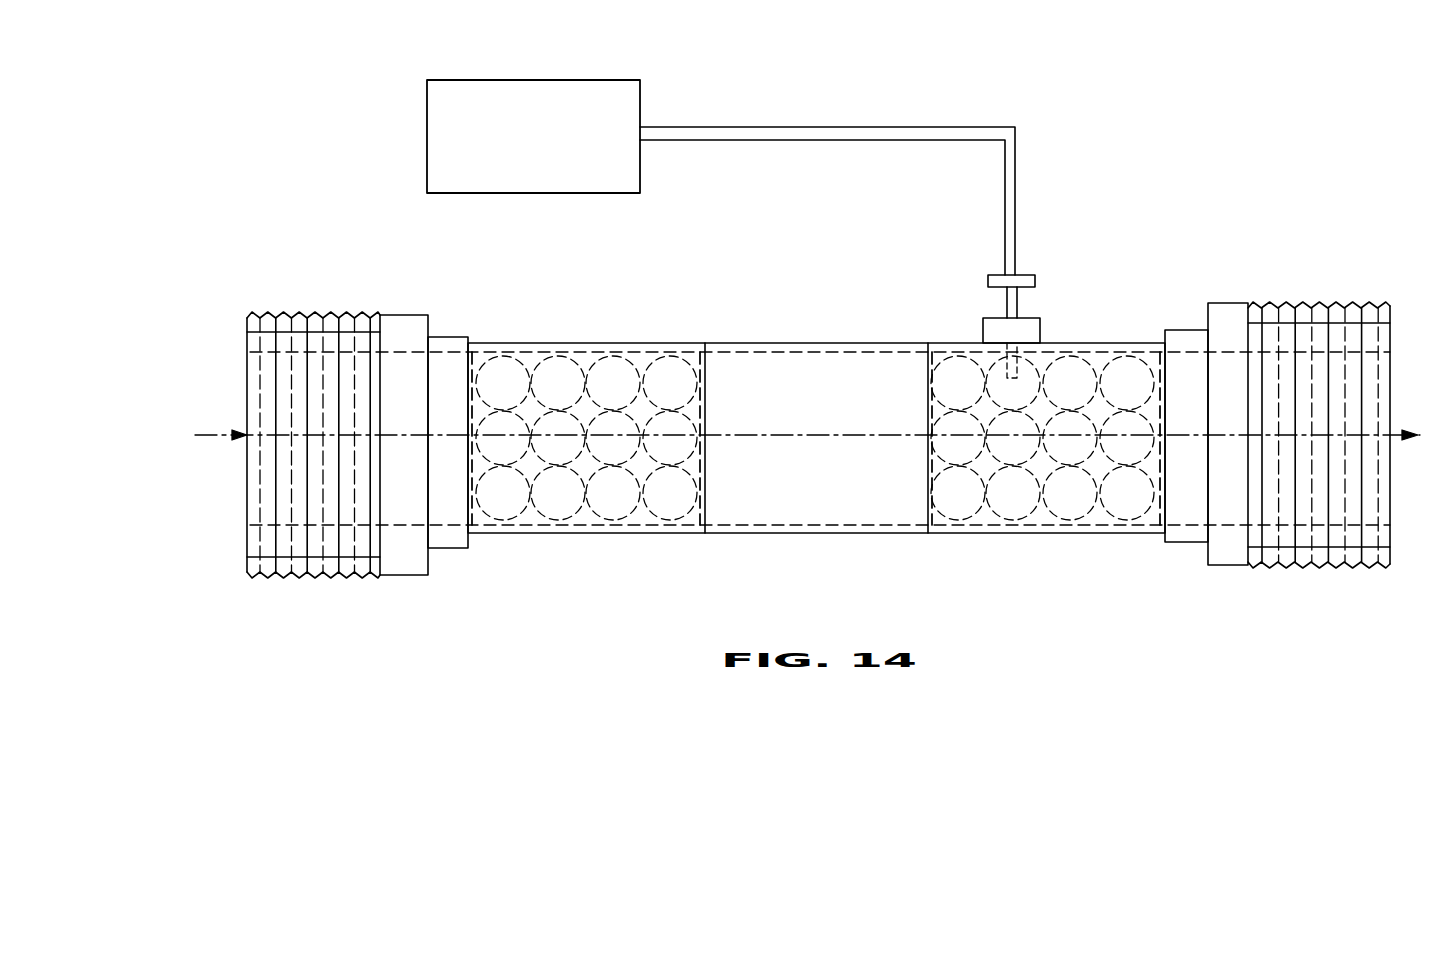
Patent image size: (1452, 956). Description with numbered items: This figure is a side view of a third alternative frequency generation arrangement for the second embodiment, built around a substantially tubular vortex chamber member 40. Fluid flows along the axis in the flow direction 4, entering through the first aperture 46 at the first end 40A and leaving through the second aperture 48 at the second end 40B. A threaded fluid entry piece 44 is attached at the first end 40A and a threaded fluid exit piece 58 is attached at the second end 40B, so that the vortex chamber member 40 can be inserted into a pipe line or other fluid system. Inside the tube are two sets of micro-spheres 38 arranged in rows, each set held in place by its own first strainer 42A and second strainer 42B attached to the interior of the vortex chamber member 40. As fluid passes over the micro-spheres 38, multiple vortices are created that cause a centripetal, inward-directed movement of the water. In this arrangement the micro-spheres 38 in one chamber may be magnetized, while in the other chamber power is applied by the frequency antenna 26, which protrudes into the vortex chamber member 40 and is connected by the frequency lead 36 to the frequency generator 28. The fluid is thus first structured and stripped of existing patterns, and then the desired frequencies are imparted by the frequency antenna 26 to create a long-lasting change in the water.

The fluid flow direction 4 is at (204, 435).
The frequency antenna 26 is at (983, 342).
The frequency generator 28 is at (540, 151).
The frequency lead 36 is at (924, 127).
The micro-spheres 38 is at (615, 380).
The vortex chamber member 40 is at (820, 533).
The first end 40A is at (538, 534).
The second end 40B is at (1097, 532).
The first strainer 42A is at (472, 362).
The second strainer 42B is at (1166, 382).
The fluid entry piece 44 is at (315, 312).
The first aperture 46 is at (247, 373).
The second aperture 48 is at (1390, 398).
The fluid exit piece 58 is at (1325, 302).